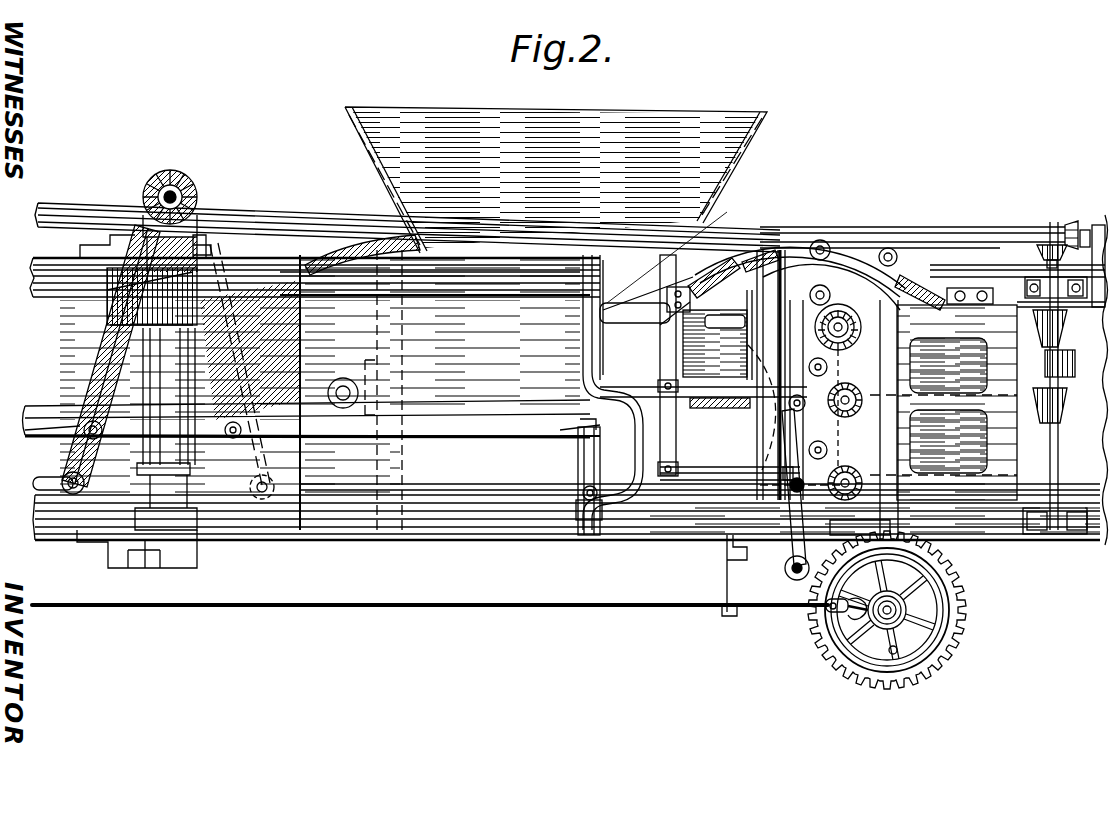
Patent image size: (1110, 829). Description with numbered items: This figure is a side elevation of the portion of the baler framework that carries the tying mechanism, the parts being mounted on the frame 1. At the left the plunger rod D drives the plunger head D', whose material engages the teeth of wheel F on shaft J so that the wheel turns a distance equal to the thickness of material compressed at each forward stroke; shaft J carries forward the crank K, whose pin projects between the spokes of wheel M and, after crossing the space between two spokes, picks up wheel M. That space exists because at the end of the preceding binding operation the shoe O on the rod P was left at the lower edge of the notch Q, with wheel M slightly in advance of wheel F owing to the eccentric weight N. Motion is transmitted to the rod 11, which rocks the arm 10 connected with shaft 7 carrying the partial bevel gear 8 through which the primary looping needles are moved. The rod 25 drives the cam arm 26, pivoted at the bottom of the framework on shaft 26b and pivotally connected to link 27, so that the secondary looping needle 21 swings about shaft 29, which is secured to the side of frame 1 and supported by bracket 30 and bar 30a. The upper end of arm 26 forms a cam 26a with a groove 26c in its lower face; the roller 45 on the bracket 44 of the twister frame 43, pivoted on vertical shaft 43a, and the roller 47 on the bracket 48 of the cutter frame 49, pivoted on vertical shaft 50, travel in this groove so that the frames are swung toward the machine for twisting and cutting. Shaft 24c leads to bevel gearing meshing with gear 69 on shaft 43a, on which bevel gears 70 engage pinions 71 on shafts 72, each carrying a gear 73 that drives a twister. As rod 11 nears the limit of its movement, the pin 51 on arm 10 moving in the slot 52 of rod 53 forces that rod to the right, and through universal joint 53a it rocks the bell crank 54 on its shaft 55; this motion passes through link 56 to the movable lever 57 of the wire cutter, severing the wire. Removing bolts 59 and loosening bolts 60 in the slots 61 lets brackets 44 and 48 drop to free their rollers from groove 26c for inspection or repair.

The frame 1 is at (333, 532).
The shaft 7 is at (193, 193).
The partial bevel gear 8 is at (107, 297).
The arm 10 is at (103, 333).
The rod 11 is at (42, 477).
The secondary looping needle 21 is at (816, 285).
The shaft 24c is at (1027, 317).
The rod 25 is at (216, 262).
The cam arm 26 is at (754, 440).
The cam 26a is at (896, 315).
The shaft 26b is at (787, 580).
The groove 26c is at (915, 285).
The link 27 is at (866, 275).
The shaft 29 is at (823, 290).
The bracket 30 is at (952, 272).
The bar 30a is at (826, 611).
The twister frame 43 is at (965, 287).
The vertical shaft 43a is at (1022, 553).
The bracket 44 is at (858, 270).
The roller 45 is at (835, 305).
The roller 47 is at (762, 258).
The bracket 48 is at (718, 275).
The cutter frame 49 is at (657, 463).
The vertical shaft 50 is at (590, 540).
The pin 51 is at (60, 437).
The slot 52 is at (130, 437).
The rod 53 is at (268, 436).
The universal joint 53a is at (573, 440).
The bell crank 54 is at (580, 450).
The shaft 55 is at (577, 527).
The link 56 is at (756, 450).
The movable lever 57 is at (748, 542).
The bolts 59 is at (670, 476).
The bolts 60 is at (673, 337).
The slots 61 is at (652, 467).
The gear 69 is at (1070, 225).
The bevel gears 70 is at (1050, 245).
The pinions 71 is at (1033, 283).
The shafts 72 is at (975, 320).
The gear 73 is at (862, 395).
The plunger rod D is at (307, 406).
The plunger head D' is at (536, 198).
The wheel F is at (953, 633).
The shaft J is at (913, 617).
The crank K is at (923, 657).
The wheel M is at (830, 637).
The eccentric weight N is at (935, 598).
The shoe O is at (827, 620).
The rod P is at (500, 612).
The notch Q is at (837, 680).